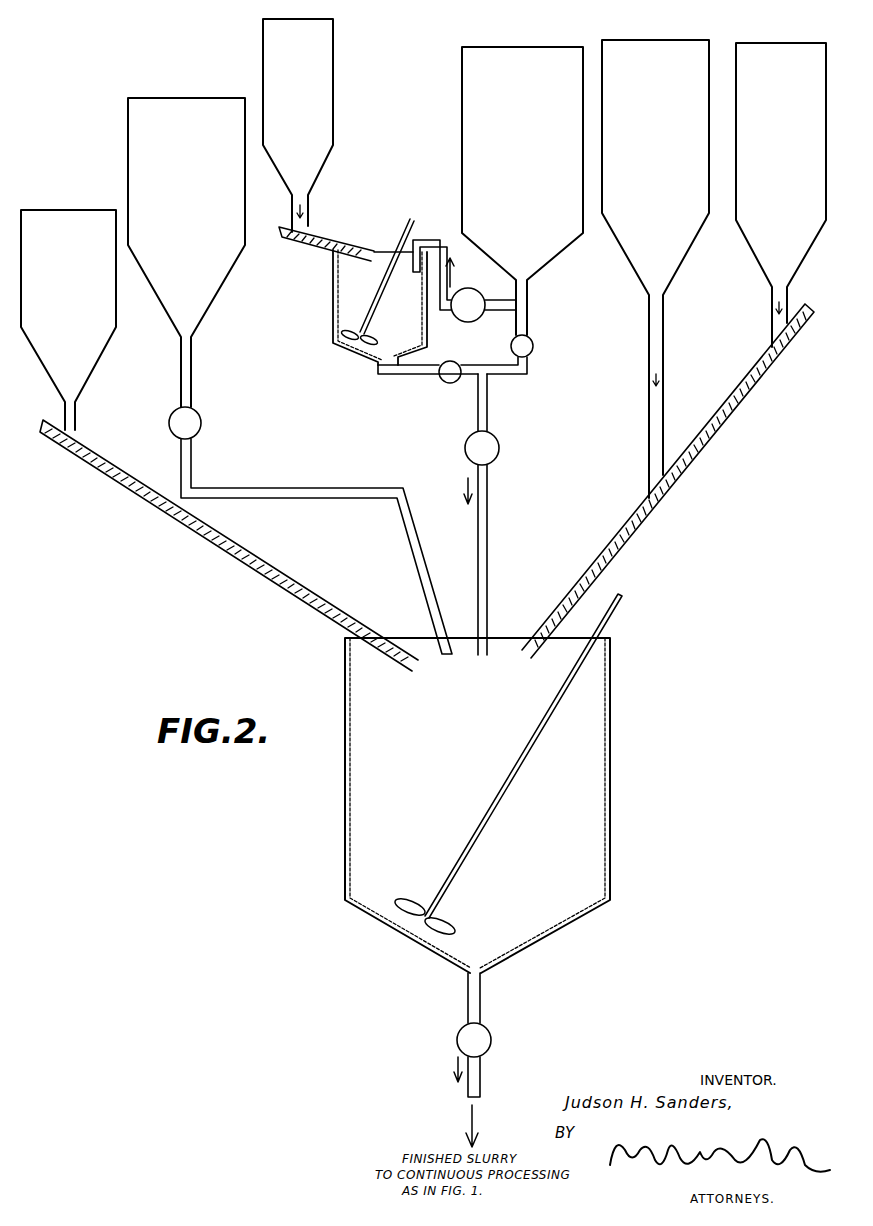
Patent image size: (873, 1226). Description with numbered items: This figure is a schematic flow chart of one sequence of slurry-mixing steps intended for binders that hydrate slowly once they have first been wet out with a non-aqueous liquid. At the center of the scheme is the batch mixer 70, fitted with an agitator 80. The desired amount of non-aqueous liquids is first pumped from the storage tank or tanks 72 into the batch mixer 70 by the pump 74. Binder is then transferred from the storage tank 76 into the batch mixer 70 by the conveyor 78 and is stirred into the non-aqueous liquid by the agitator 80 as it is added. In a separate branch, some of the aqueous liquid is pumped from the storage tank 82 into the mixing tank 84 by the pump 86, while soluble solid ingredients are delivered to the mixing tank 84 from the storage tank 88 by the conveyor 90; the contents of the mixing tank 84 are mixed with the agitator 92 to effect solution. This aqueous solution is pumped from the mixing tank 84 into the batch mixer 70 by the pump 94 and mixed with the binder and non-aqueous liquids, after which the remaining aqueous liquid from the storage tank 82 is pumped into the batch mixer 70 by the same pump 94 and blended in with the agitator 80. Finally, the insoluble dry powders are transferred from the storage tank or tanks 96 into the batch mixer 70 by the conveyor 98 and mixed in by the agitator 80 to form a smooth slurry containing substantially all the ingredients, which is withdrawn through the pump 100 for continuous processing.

The batch mixer 70 is at (612, 852).
The non-aqueous liquids storage tank 72 is at (222, 286).
The pump 74 is at (202, 423).
The binder storage tank 76 is at (108, 346).
The conveyor 78 is at (208, 543).
The agitator 80 is at (616, 610).
The aqueous liquid storage tank 82 is at (536, 262).
The mixing tank 84 is at (332, 323).
The pump 86 is at (466, 322).
The soluble solid ingredients storage tank 88 is at (334, 132).
The conveyor 90 is at (318, 232).
The agitator 92 is at (411, 221).
The pump 94 is at (499, 448).
The insoluble dry powders storage tank 96 is at (740, 272).
The conveyor 98 is at (700, 462).
The pump 100 is at (491, 1036).